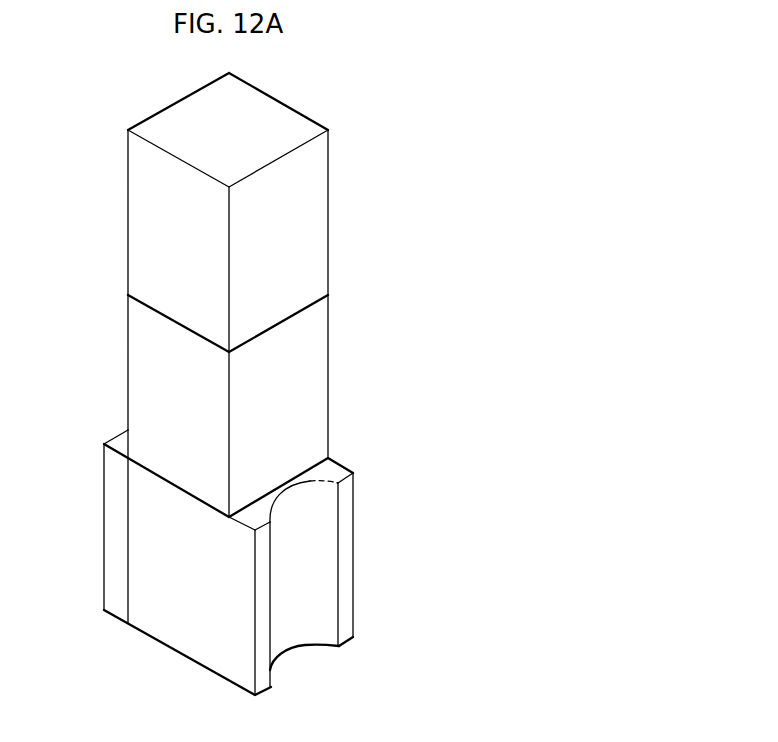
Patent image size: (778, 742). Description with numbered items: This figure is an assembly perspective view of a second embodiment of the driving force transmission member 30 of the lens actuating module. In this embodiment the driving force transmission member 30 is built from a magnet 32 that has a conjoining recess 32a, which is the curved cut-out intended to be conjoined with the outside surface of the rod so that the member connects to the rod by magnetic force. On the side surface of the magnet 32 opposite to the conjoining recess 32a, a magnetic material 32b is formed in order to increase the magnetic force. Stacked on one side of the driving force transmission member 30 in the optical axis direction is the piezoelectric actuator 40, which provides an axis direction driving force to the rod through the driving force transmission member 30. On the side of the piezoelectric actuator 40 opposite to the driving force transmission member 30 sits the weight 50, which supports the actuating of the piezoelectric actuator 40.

The driving force transmission member 30 is at (183, 630).
The magnet 32 is at (143, 588).
The conjoining recess 32a is at (317, 593).
The magnetic material 32b is at (117, 517).
The piezoelectric actuator 40 is at (313, 387).
The weight 50 is at (313, 247).